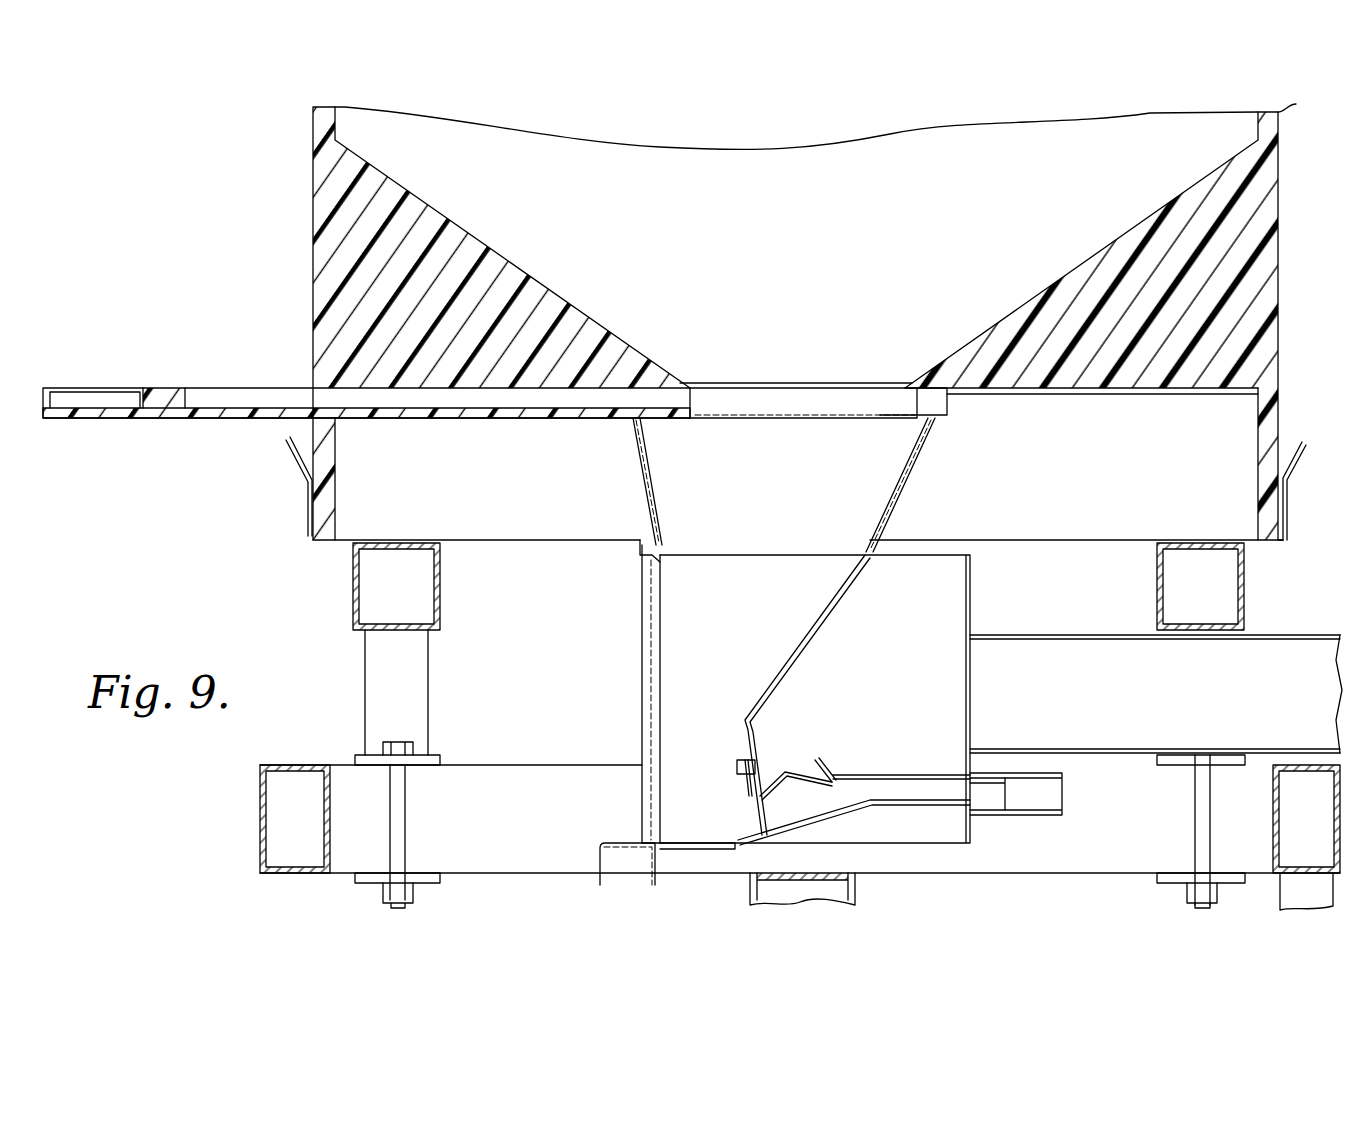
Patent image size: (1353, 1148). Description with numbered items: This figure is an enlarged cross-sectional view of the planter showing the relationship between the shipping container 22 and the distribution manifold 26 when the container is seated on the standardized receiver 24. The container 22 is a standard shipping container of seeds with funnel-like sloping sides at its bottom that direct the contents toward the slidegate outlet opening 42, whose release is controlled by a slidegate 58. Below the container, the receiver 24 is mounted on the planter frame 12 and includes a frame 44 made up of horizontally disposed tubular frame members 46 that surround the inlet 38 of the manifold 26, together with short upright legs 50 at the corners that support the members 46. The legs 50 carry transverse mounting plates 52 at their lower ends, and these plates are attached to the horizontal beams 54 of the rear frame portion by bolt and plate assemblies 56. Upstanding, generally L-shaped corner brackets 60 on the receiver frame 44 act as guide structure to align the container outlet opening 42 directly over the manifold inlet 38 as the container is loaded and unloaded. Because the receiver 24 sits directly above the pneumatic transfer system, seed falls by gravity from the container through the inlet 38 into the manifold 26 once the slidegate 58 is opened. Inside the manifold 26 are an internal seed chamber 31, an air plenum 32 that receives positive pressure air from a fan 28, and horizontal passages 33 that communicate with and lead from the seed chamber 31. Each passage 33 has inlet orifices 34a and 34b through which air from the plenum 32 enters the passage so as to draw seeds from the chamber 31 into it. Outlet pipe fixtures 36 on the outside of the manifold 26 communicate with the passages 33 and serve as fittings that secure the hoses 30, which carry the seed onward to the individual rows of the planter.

The mobile frame 12 is at (791, 836).
The standard shipping container 22 is at (1284, 127).
The standardized receiver 24 is at (757, 654).
The manifold 26 is at (791, 694).
The fan 28 is at (1297, 636).
The hoses 30 is at (1050, 814).
The internal seed chamber 31 is at (680, 688).
The air plenum 32 is at (945, 596).
The horizontal passages 33 is at (868, 792).
The inlet orifice 34a is at (812, 768).
The inlet orifice 34b is at (760, 792).
The outlet pipe fixtures 36 is at (980, 800).
The inlet 38 is at (920, 455).
The slidegate outlet opening 42 is at (780, 400).
The frame 44 is at (452, 583).
The tubular frame members 46 is at (352, 606).
The upright legs 50 is at (370, 690).
The transverse mounting plates 52 is at (430, 755).
The horizontal beams 54 is at (535, 850).
The bolt and plate assemblies 56 is at (396, 838).
The slidegate 58 is at (166, 390).
The L-shaped corner brackets 60 is at (306, 468).